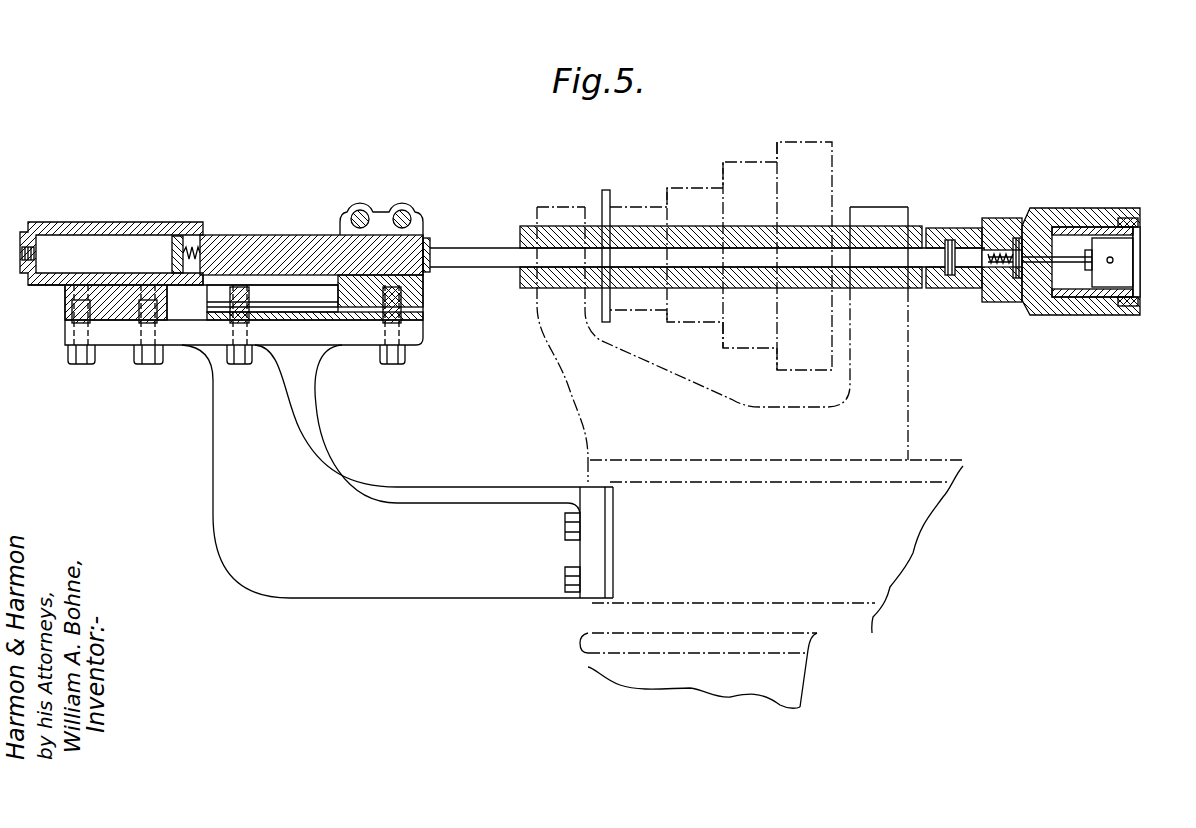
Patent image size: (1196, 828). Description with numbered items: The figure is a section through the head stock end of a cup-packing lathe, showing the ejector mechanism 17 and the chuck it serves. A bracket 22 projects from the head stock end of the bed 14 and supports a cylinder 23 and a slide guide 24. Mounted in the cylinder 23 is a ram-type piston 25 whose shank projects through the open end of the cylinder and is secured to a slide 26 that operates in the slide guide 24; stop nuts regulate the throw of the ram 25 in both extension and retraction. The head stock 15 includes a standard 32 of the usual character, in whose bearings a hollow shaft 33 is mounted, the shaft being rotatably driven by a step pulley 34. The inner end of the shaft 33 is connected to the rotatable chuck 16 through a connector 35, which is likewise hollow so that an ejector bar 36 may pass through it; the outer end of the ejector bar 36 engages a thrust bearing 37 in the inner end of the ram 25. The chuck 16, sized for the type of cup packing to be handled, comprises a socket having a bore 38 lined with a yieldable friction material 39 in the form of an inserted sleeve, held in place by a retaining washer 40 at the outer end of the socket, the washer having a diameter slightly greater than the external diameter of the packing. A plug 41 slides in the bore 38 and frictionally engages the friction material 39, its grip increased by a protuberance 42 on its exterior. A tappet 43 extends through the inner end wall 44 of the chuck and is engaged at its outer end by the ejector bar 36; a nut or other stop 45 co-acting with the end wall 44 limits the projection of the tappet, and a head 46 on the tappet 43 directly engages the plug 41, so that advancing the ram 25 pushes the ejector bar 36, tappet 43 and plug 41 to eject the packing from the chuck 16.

The bed 14 is at (771, 584).
The head stock 15 is at (878, 200).
The rotatable chuck 16 is at (1067, 203).
The ejector mechanism 17 is at (143, 218).
The bracket 22 is at (397, 488).
The cylinder 23 is at (83, 228).
The slide guide 24 is at (288, 298).
The ram-type piston 25 is at (225, 242).
The slide 26 is at (378, 217).
The standard 32 is at (888, 358).
The hollow shaft 33 is at (917, 227).
The step pulley 34 is at (748, 162).
The connector 35 is at (967, 227).
The ejector bar 36 is at (487, 262).
The thrust bearing 37 is at (433, 242).
The bore 38 is at (1087, 227).
The yieldable friction material 39 is at (1100, 293).
The retaining washer 40 is at (1143, 228).
The plug 41 is at (1122, 270).
The protuberance 42 is at (1113, 260).
The tappet 43 is at (1072, 262).
The inner end wall 44 is at (1020, 292).
The stop nut 45 is at (1018, 238).
The head 46 is at (1090, 270).